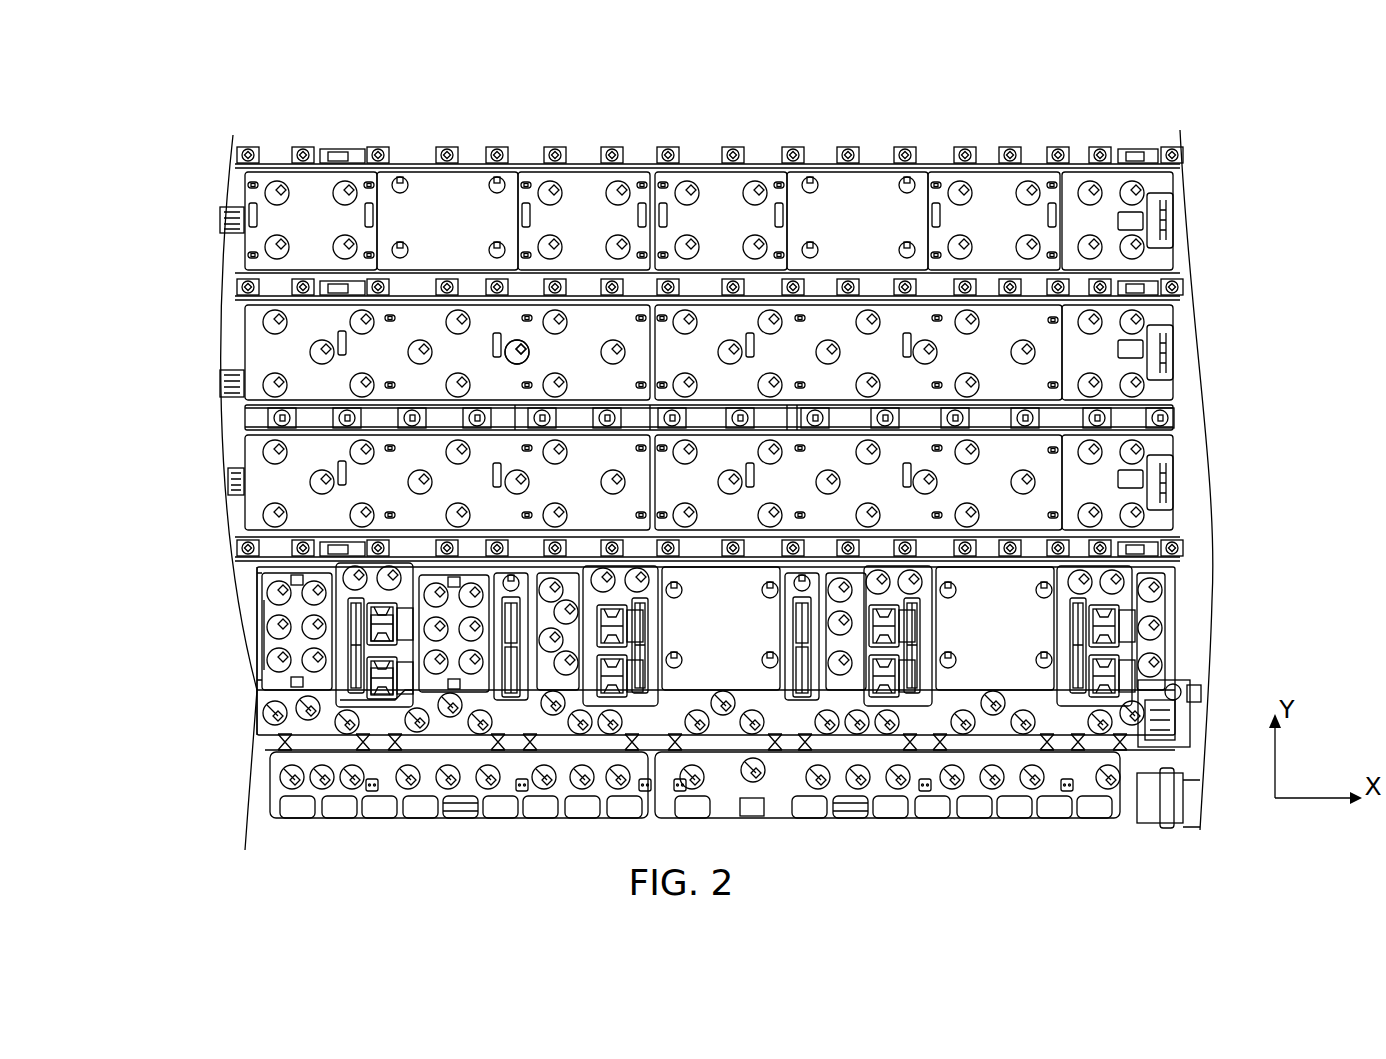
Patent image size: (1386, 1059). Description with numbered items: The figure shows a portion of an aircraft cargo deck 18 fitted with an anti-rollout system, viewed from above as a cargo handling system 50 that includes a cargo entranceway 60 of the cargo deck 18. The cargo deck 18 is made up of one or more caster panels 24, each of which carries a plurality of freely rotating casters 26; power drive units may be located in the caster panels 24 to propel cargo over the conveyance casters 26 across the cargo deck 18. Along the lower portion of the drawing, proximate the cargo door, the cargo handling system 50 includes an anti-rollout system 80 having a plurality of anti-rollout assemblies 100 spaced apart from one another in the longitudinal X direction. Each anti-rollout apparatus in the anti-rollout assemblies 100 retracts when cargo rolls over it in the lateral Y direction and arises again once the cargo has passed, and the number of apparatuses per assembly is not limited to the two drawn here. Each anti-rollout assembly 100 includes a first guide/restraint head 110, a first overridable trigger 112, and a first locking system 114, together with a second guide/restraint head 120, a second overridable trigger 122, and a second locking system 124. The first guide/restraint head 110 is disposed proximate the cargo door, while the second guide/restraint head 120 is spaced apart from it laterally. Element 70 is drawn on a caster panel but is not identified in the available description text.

The cargo handling system 50 is at (466, 100).
The cargo entranceway 60 is at (634, 98).
The casters 26 is at (518, 345).
The cargo deck 18 is at (716, 185).
The caster panels 24 is at (781, 350).
The panel 70 is at (960, 195).
The anti-rollout system 80 is at (1195, 600).
The anti-rollout assemblies 100 is at (348, 641).
The second guide/restraint head 120 is at (372, 607).
The second locking system 124 is at (368, 614).
The second overridable trigger 122 is at (366, 630).
The first guide/restraint head 110 is at (370, 668).
The first locking system 114 is at (375, 662).
The first overridable trigger 112 is at (380, 695).